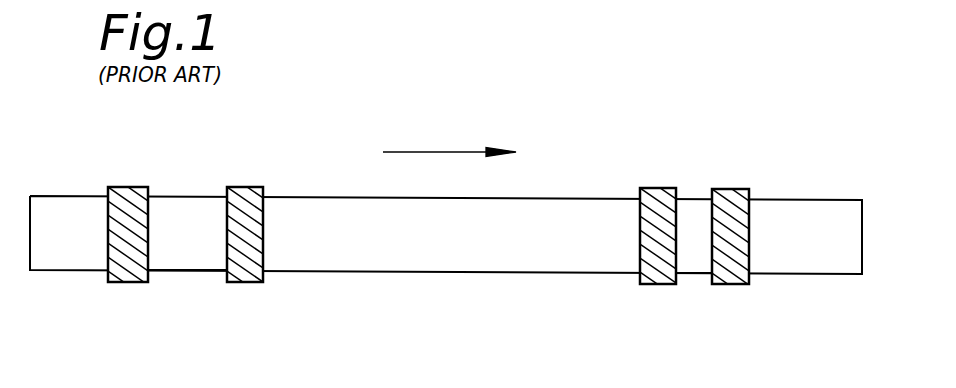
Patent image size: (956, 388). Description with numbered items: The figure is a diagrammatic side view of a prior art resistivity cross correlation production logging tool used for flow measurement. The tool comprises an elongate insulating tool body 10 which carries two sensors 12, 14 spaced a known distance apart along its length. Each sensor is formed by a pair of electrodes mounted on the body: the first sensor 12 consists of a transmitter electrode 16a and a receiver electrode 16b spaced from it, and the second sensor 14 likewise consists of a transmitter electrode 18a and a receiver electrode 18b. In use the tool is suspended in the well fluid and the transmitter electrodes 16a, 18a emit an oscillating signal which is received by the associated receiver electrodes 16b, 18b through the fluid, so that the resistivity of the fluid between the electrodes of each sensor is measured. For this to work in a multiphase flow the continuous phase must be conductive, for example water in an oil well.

The insulating tool body 10 is at (437, 258).
The sensor 12 is at (187, 290).
The sensor 14 is at (698, 293).
The transmitter electrode 16a is at (128, 187).
The receiver electrode 16b is at (245, 187).
The transmitter electrode 18a is at (659, 188).
The receiver electrode 18b is at (730, 189).